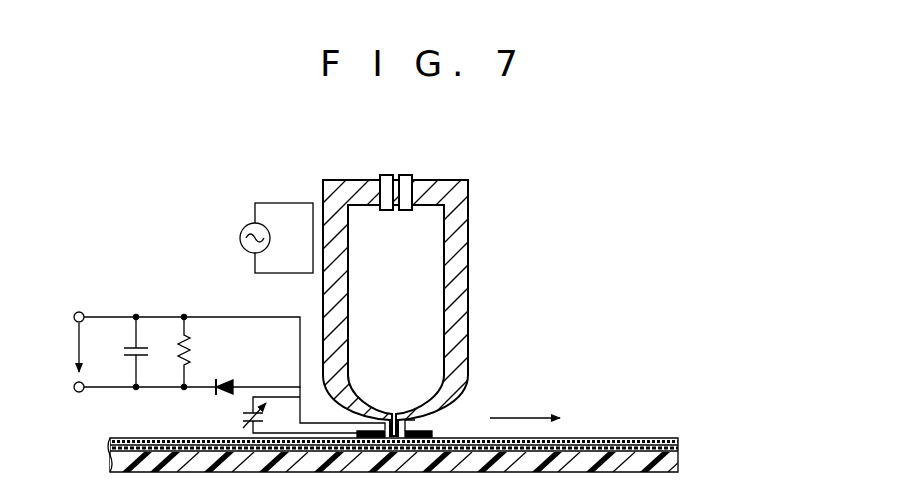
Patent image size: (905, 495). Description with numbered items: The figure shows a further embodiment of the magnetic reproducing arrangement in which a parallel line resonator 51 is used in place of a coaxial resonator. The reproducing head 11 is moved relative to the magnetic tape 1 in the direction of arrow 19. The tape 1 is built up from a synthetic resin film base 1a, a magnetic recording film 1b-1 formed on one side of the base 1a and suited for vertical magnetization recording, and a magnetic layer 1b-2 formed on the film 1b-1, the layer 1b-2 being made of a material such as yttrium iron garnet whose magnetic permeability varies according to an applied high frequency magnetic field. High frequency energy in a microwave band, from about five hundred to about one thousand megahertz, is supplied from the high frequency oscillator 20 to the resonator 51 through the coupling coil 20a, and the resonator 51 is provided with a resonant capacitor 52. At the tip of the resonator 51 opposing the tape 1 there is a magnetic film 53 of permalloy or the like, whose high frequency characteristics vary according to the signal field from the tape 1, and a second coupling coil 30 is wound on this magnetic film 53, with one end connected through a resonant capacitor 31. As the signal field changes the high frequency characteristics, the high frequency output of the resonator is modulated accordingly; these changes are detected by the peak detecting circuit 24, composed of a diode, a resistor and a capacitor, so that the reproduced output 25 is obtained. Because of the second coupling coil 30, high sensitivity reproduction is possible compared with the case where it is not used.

The magnetic tape 1 is at (430, 424).
The synthetic resin film base 1a is at (678, 462).
The magnetic recording film 1b-1 is at (603, 437).
The magnetic layer 1b-2 is at (678, 447).
The reproducing head 11 is at (474, 316).
The arrow 19 is at (518, 416).
The high frequency oscillator 20 is at (240, 238).
The coupling coil 20a is at (294, 202).
The peak detecting circuit 24 is at (218, 340).
The reproduced output 25 is at (78, 340).
The second coupling coil 30 is at (430, 427).
The resonant capacitor 31 is at (238, 413).
The parallel line resonator 51 is at (470, 249).
The resonant capacitor 52 is at (406, 175).
The magnetic film 53 is at (393, 412).